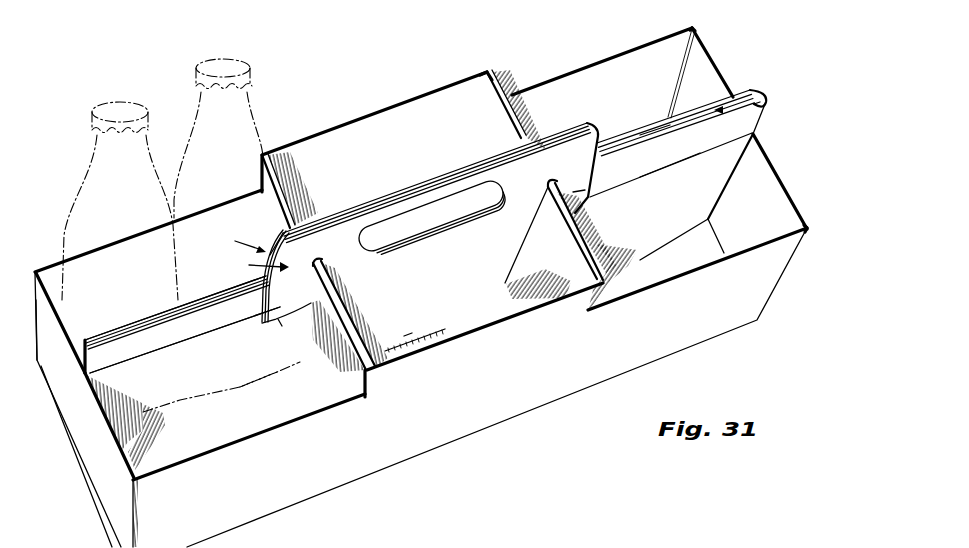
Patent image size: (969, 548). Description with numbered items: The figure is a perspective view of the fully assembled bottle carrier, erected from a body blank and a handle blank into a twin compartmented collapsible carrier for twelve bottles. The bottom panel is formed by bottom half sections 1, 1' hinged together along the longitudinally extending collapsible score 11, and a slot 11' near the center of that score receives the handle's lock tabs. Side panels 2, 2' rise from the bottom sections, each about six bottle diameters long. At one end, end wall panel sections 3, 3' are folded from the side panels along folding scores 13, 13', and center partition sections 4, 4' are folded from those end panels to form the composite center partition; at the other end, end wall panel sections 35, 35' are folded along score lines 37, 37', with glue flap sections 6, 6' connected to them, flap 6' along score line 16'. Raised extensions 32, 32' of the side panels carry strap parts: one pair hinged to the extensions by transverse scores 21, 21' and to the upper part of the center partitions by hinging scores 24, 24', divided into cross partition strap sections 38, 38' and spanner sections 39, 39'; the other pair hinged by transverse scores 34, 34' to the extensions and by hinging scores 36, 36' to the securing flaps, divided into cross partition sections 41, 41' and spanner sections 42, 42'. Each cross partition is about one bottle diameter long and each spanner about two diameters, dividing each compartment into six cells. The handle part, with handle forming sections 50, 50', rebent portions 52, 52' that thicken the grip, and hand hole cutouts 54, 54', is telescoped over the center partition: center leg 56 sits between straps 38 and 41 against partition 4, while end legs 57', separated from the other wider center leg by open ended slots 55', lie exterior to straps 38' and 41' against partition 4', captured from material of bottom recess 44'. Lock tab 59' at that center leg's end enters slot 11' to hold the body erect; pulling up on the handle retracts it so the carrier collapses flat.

The bottom half section 1 is at (164, 410).
The bottom half section 1' is at (149, 456).
The side panel 2 is at (363, 150).
The side panel 2' is at (470, 387).
The end wall panel section 3 is at (28, 330).
The end wall panel section 3' is at (101, 442).
The center partition section 4 is at (386, 217).
The center partition section 4' is at (421, 254).
The glue flap section 6 is at (731, 85).
The glue flap section 6' is at (783, 119).
The collapsible score 11 is at (283, 385).
The slot 11' is at (424, 325).
The folding score 13 is at (58, 298).
The folding score 13' is at (162, 513).
The score line 16' is at (762, 176).
The transverse score 21 is at (239, 168).
The transverse score 21' is at (390, 386).
The hinging score 24 is at (64, 356).
The hinging score 24' is at (92, 420).
The raised extension 32 is at (374, 113).
The raised extension 32' is at (485, 326).
The transverse score 34 is at (478, 56).
The transverse score 34' is at (648, 265).
The end wall panel section 35 is at (721, 61).
The end wall panel section 35' is at (764, 193).
The hinging score 36 is at (778, 82).
The hinging score 36' is at (789, 96).
The score line 37 is at (707, 60).
The score line 37' is at (785, 222).
The cross partition strap section 38 is at (300, 190).
The cross partition strap section 38' is at (349, 316).
The spanner section 39 is at (175, 308).
The spanner section 39' is at (185, 340).
The cross partition section 41 is at (516, 101).
The cross partition section 41' is at (596, 231).
The spanner section 42 is at (675, 123).
The spanner section 42' is at (686, 162).
The bottom recess 44' is at (531, 243).
The handle forming section 50 is at (238, 240).
The handle forming section 50' is at (255, 261).
The rebent portion 52 is at (274, 265).
The rebent portion 52' is at (300, 246).
The hand hole cutout 54 is at (430, 216).
The hand hole cutout 54' is at (446, 224).
The open ended slot 55' is at (439, 221).
The center leg 56 is at (442, 301).
The end leg 57' is at (447, 274).
The lock tab 59' is at (394, 320).